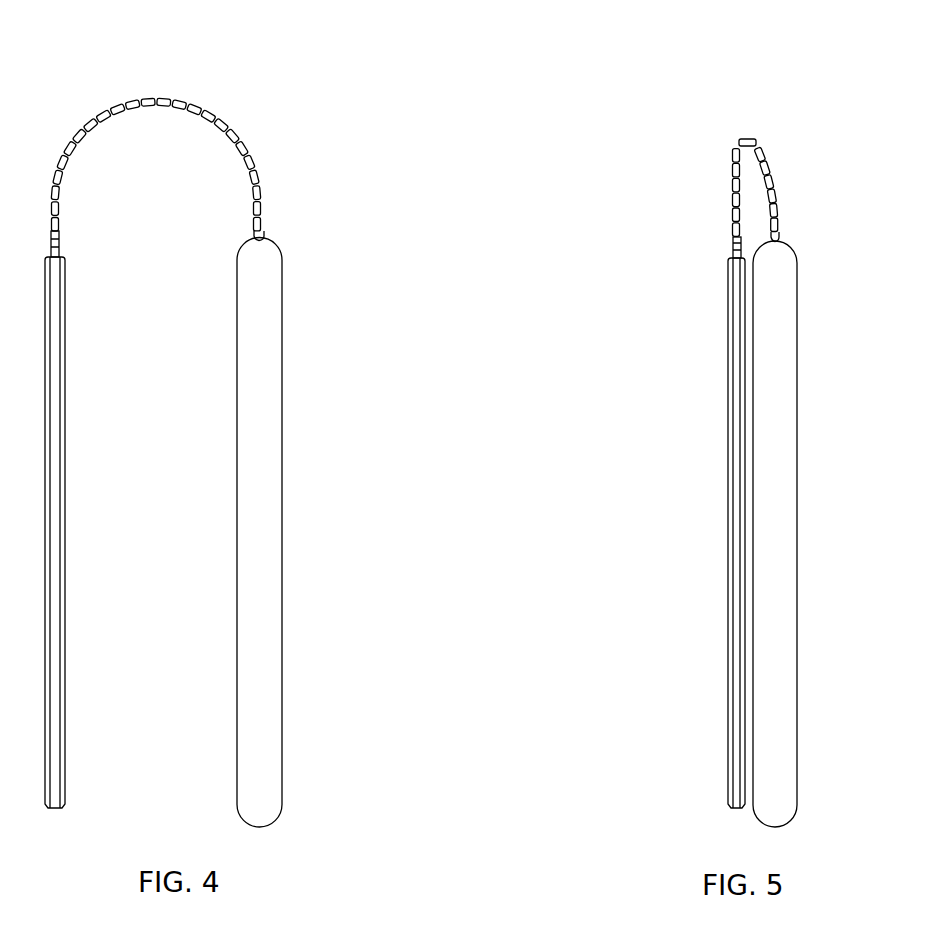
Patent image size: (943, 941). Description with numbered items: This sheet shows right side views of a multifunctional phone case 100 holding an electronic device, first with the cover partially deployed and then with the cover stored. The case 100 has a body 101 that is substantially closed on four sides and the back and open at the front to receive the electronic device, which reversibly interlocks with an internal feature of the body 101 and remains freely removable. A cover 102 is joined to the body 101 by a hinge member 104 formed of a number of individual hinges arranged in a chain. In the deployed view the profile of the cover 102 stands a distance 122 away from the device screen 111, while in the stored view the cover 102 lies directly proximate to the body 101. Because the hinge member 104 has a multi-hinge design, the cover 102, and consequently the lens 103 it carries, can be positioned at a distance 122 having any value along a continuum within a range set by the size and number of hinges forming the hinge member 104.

In FIG. 4, the multifunctional phone case 100 is at (327, 64).
In FIG. 5, the multifunctional phone case 100 is at (771, 85).
In FIG. 4, the body 101 is at (250, 608).
In FIG. 5, the body 101 is at (783, 703).
In FIG. 4, the cover 102 is at (65, 329).
In FIG. 5, the cover 102 is at (746, 443).
In FIG. 4, the lens 103 is at (72, 474).
In FIG. 4, the hinge member 104 is at (233, 140).
In FIG. 5, the hinge member 104 is at (737, 177).
In FIG. 4, the device screen 111 is at (203, 439).
In FIG. 4, the distance 122 is at (230, 593).